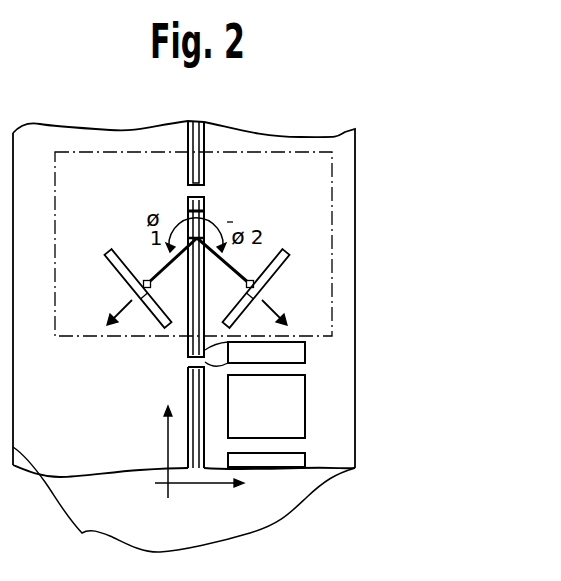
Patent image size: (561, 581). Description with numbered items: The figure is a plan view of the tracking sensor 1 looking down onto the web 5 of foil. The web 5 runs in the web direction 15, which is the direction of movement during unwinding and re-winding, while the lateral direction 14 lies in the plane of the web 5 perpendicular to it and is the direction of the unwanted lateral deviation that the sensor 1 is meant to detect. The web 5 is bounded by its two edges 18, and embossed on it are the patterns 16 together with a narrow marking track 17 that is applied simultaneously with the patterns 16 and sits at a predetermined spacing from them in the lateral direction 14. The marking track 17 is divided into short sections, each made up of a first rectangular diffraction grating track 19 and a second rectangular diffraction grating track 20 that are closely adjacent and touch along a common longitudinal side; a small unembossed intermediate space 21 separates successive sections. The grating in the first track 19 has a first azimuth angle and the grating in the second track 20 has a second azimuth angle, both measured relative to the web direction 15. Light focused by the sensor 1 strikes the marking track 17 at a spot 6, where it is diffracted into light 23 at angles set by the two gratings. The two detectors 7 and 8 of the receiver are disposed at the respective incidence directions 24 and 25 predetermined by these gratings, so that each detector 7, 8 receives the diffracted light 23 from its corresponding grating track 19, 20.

The tracking sensor 1 is at (75, 181).
The web of foil 5 is at (332, 146).
The spot 6 is at (183, 223).
The detector 7 is at (118, 268).
The detector 8 is at (272, 270).
The lateral direction 14 is at (201, 486).
The web direction 15 is at (168, 452).
The patterns 16 is at (285, 407).
The marking track 17 is at (205, 167).
The edges 18 is at (184, 506).
The first diffraction grating track 19 is at (188, 349).
The second diffraction grating track 20 is at (300, 352).
The intermediate space 21 is at (193, 364).
The diffracted light 23 is at (222, 261).
The incidence direction 24 is at (115, 315).
The incidence direction 25 is at (282, 306).